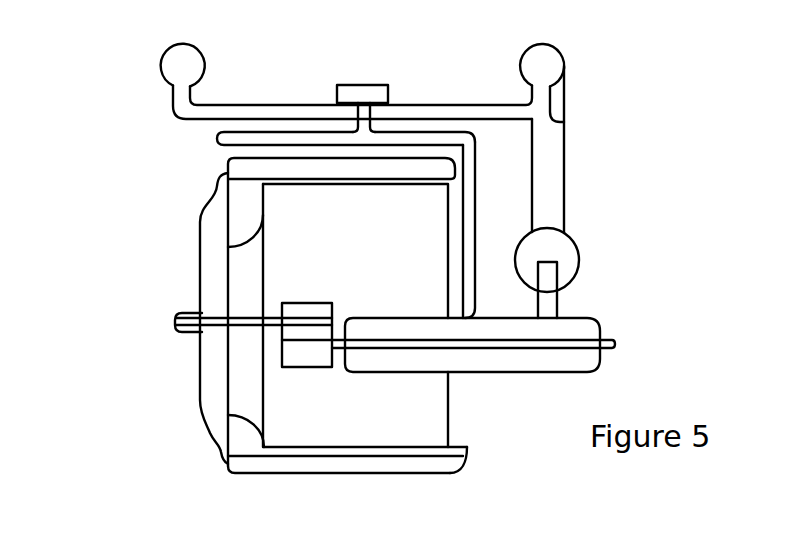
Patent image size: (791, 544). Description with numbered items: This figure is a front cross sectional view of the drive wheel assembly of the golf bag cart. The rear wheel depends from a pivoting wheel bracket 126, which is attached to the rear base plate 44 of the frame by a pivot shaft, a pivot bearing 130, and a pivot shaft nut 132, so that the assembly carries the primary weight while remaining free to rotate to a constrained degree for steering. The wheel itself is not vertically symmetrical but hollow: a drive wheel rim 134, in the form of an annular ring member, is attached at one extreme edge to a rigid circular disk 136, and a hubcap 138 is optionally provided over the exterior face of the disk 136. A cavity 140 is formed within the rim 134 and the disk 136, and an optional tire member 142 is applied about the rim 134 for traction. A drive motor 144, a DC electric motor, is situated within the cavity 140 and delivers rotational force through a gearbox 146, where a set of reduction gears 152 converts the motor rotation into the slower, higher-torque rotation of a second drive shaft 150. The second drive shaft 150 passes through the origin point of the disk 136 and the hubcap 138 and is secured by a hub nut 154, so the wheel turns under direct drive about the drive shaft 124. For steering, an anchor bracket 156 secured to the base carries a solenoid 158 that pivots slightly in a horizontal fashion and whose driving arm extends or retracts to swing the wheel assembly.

The rear base plate 44 is at (453, 103).
The drive shaft 124 is at (478, 223).
The pivoting wheel bracket 126 is at (217, 139).
The pivot bearing 130 is at (357, 113).
The pivot shaft nut 132 is at (362, 85).
The drive wheel rim 134 is at (468, 450).
The rigid circular disk 136 is at (243, 242).
The hubcap 138 is at (210, 447).
The cavity 140 is at (433, 381).
The tire member 142 is at (380, 474).
The drive motor 144 is at (585, 333).
The gearbox 146 is at (567, 346).
The second drive shaft 150 is at (207, 316).
The reduction gears 152 is at (300, 356).
The hub nut 154 is at (190, 337).
The anchor bracket 156 is at (564, 183).
The solenoid 158 is at (580, 253).